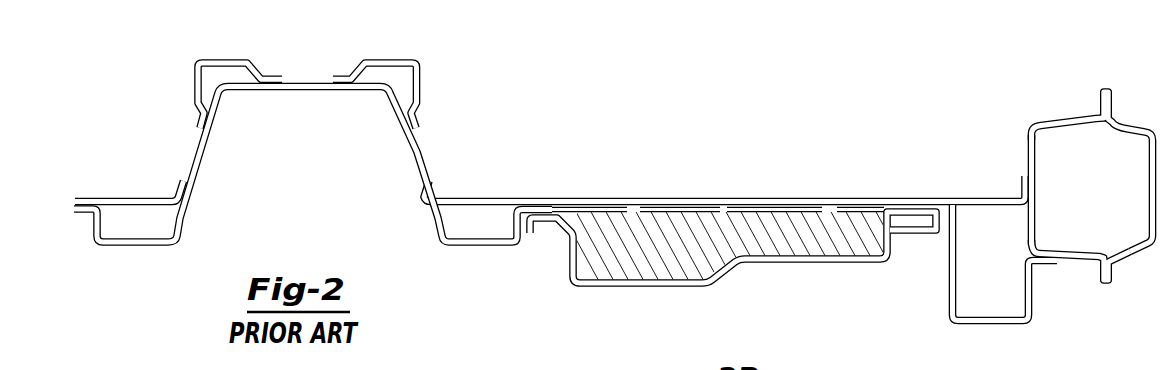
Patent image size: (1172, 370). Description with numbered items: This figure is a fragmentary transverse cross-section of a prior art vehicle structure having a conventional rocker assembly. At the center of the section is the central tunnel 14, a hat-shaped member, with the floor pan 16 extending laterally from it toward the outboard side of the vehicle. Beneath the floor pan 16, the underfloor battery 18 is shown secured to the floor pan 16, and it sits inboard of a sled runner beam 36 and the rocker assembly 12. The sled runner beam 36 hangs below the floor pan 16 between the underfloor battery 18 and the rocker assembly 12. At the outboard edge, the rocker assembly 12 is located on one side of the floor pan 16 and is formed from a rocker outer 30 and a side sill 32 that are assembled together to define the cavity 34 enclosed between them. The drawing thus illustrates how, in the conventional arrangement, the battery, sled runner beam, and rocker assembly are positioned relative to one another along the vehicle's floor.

The rocker assembly 12 is at (1069, 203).
The central tunnel 14 is at (194, 155).
The floor pan 16 is at (558, 198).
The underfloor battery 18 is at (687, 273).
The rocker outer 30 is at (1061, 195).
The side sill 32 is at (1028, 145).
The cavity 34 is at (1091, 213).
The sled runner beam 36 is at (949, 303).